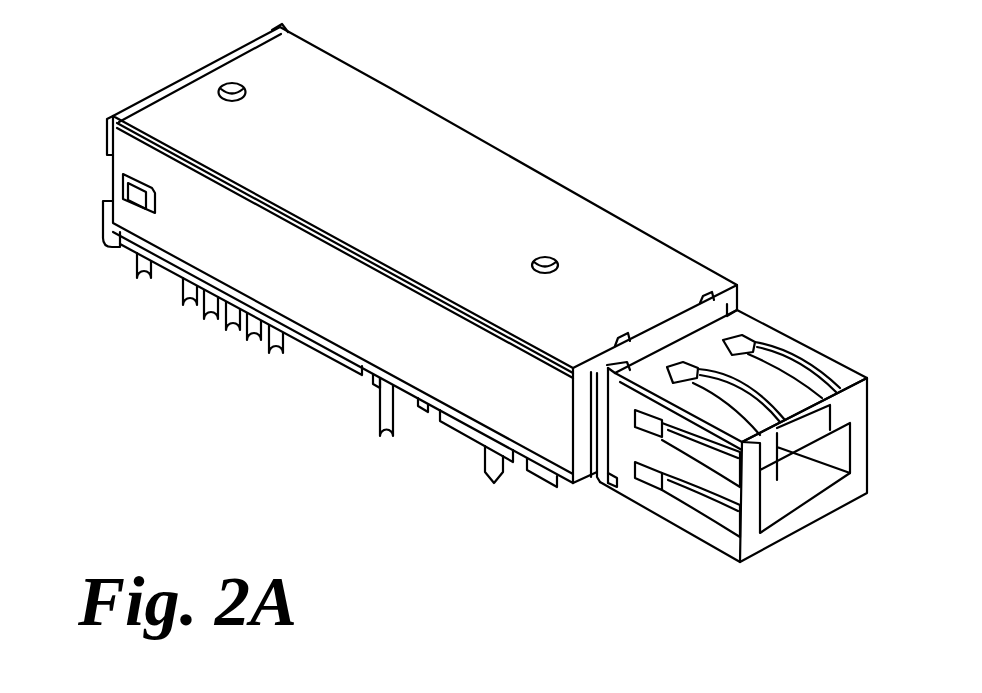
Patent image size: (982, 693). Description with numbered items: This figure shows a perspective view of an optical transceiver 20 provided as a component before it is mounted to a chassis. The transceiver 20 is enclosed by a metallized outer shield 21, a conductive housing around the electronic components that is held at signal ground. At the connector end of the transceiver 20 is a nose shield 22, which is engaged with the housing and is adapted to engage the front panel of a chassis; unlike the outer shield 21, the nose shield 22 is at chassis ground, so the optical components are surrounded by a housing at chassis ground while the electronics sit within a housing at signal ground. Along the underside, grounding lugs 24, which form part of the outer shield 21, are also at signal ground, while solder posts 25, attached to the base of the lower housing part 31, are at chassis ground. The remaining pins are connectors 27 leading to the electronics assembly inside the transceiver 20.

The transceiver 20 is at (495, 120).
The metallized outer shield 21 is at (556, 181).
The nose shield 22 is at (790, 323).
The grounding lugs 24 is at (141, 293).
The solder posts 25 is at (475, 448).
The connectors 27 is at (234, 343).
The lower housing part 31 is at (433, 450).